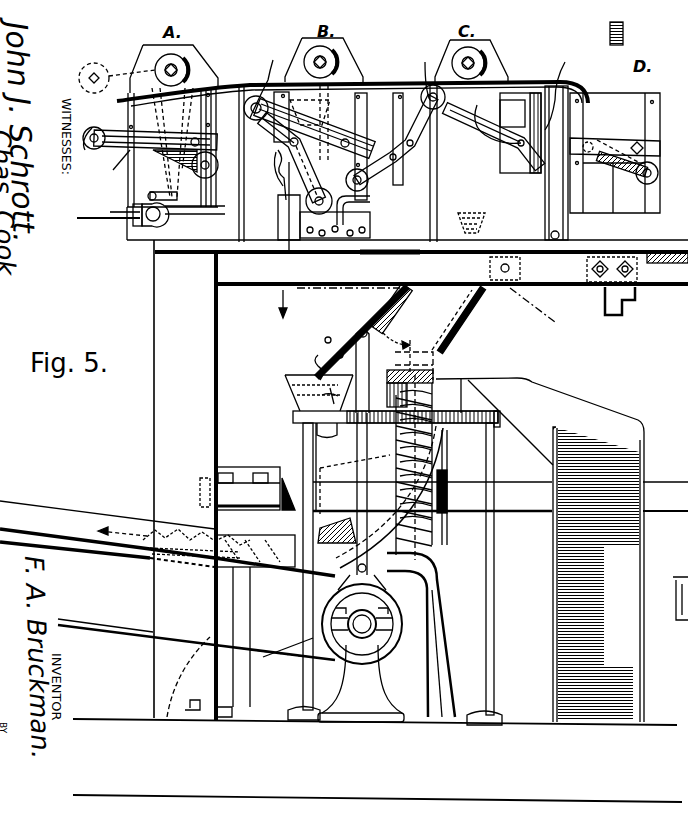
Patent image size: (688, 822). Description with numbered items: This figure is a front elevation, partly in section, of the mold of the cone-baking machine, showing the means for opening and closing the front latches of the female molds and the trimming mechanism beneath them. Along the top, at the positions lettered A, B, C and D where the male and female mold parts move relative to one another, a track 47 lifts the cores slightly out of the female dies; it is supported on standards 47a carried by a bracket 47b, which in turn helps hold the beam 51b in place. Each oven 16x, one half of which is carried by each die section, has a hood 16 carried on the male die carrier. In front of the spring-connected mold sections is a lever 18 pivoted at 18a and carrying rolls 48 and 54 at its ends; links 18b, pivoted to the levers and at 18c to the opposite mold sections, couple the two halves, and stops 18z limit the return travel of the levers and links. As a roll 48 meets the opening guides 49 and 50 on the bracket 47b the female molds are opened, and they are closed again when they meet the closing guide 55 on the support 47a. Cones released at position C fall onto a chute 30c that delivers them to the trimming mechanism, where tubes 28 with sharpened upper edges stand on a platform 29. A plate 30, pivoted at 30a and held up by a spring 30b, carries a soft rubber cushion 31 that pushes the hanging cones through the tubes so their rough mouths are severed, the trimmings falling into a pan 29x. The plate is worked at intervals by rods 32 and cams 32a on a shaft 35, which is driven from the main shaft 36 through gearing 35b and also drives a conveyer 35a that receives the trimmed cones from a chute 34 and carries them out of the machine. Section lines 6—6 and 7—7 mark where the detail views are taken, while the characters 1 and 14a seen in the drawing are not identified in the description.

The floor base 1 is at (377, 760).
The section line 6— 6 is at (297, 290).
The section line 7— 7 is at (375, 506).
The pulley 14a is at (501, 54).
The hood 16 is at (162, 60).
The oven 16x is at (182, 200).
The lever 18 is at (190, 180).
The pivot 18a is at (600, 136).
The link 18b is at (140, 190).
The link pivot 18c is at (331, 121).
The stop 18z is at (143, 198).
The tube 28 is at (436, 385).
The platform 29 is at (469, 420).
The pan 29x is at (318, 376).
The plate 30 is at (378, 305).
The pivot 30a is at (352, 360).
The spring 30b is at (322, 398).
The chute 30c is at (470, 323).
The rubber cushion 31 is at (398, 302).
The rod 32 is at (400, 442).
The cam 32a is at (325, 603).
The chute 34 is at (441, 452).
The shaft 35 is at (366, 632).
The conveyer 35a is at (130, 553).
The gearing 35b is at (397, 592).
The main shaft 36 is at (285, 474).
The track 47 is at (392, 80).
The standard 47a is at (407, 463).
The bracket 47b is at (452, 269).
The roll 48 is at (207, 178).
The opening guide 49 is at (338, 164).
The opening guide 50 is at (390, 264).
The beam 51b is at (620, 312).
The roll 54 is at (100, 125).
The closing guide 55 is at (577, 123).